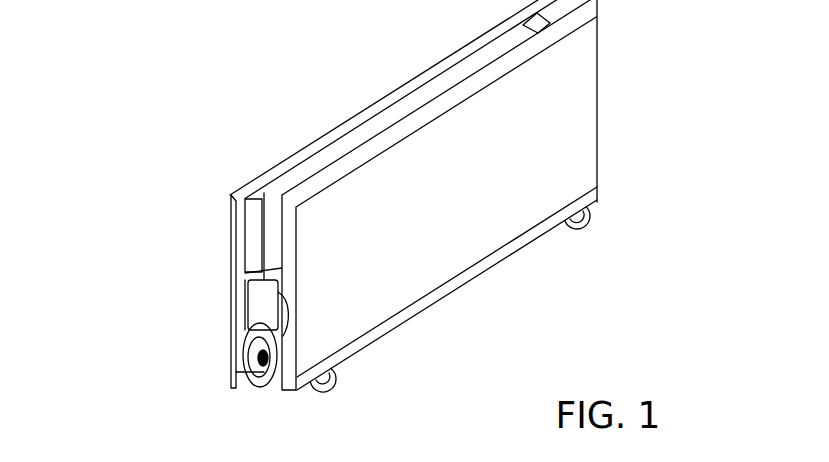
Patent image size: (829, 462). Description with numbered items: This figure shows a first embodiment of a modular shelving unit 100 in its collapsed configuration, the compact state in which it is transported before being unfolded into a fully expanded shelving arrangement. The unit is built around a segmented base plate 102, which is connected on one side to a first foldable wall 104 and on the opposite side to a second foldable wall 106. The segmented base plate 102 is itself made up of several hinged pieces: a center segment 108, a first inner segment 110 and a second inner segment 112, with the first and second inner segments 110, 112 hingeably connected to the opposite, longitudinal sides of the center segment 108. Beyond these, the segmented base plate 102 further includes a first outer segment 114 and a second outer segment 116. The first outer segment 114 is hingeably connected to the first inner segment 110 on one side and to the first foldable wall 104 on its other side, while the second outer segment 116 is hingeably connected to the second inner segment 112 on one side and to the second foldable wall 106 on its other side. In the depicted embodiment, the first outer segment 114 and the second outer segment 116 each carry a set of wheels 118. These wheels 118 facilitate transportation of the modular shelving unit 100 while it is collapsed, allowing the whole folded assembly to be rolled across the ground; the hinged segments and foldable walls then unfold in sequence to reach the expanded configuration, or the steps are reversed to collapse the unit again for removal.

The modular shelving unit 100 is at (169, 43).
The segmented base plate 102 is at (250, 293).
The first foldable wall 104 is at (375, 118).
The second foldable wall 106 is at (557, 115).
The center segment 108 is at (252, 272).
The first inner segment 110 is at (262, 304).
The second inner segment 112 is at (275, 307).
The first outer segment 114 is at (235, 373).
The second outer segment 116 is at (463, 273).
The wheels 118 is at (587, 222).